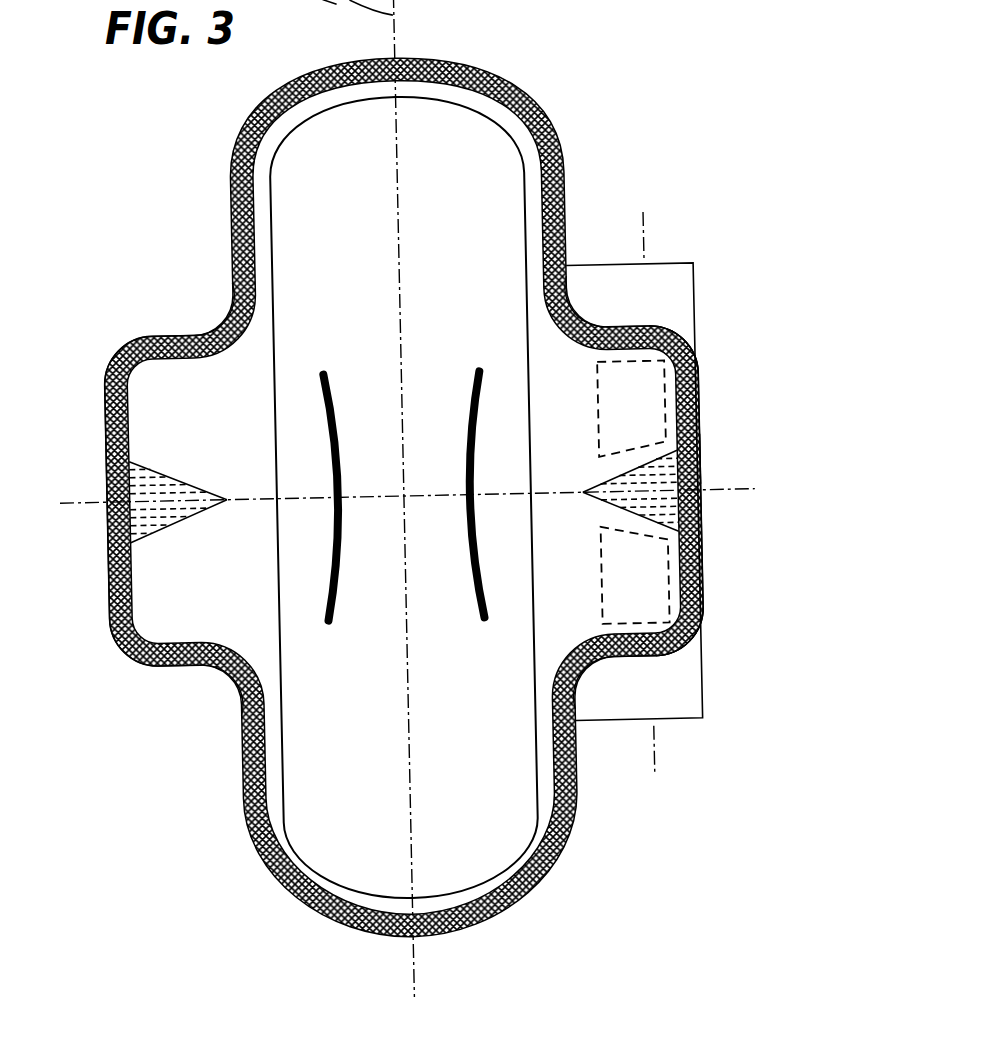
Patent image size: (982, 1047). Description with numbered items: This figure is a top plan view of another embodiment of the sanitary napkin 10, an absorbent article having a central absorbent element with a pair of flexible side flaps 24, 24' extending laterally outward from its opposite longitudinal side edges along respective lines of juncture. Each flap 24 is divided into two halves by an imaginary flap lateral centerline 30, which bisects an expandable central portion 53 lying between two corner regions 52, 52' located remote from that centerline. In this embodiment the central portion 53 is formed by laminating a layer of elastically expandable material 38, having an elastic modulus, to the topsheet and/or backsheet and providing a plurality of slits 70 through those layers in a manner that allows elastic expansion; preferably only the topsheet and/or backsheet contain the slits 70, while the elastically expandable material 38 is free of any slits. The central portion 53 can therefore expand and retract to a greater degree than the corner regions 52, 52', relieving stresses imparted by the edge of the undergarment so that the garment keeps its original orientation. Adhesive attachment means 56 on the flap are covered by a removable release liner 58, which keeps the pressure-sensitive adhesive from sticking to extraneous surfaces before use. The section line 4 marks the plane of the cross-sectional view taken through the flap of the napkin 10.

The sanitary napkin 10 is at (567, 84).
The side flap 24 is at (681, 490).
The side flap 24' is at (151, 501).
The flap lateral centerline 30 is at (62, 493).
The elastically expandable material 38 is at (703, 465).
The corner region 52 is at (710, 318).
The corner region 52' is at (726, 646).
The central portion 53 is at (653, 512).
The adhesive attachment means 56 is at (664, 383).
The release liner 58 is at (690, 726).
The slits 70 is at (701, 434).
The section line 4- 4 is at (646, 221).